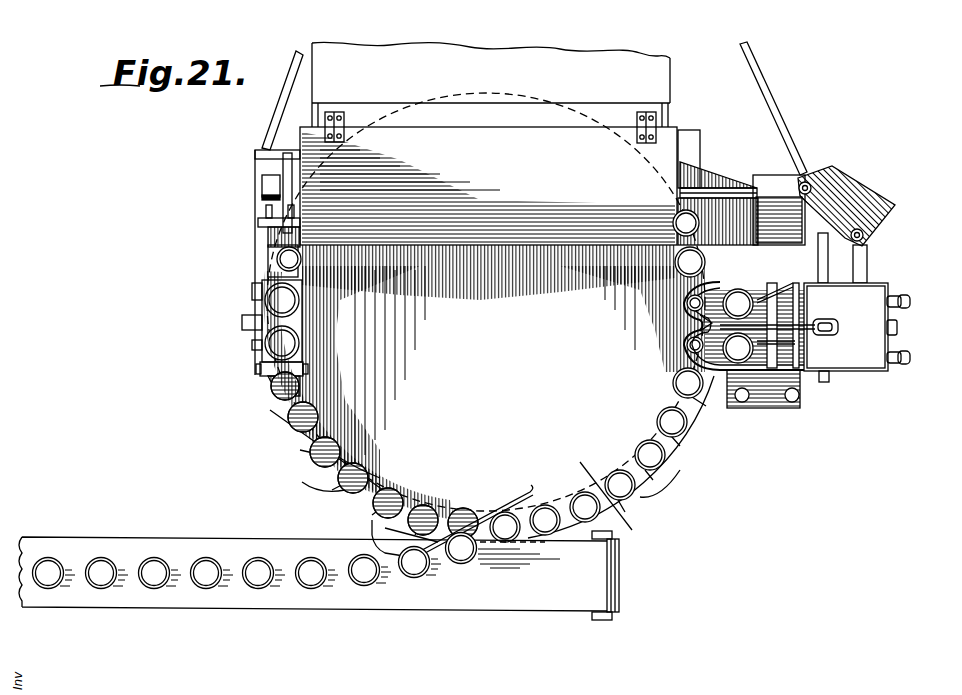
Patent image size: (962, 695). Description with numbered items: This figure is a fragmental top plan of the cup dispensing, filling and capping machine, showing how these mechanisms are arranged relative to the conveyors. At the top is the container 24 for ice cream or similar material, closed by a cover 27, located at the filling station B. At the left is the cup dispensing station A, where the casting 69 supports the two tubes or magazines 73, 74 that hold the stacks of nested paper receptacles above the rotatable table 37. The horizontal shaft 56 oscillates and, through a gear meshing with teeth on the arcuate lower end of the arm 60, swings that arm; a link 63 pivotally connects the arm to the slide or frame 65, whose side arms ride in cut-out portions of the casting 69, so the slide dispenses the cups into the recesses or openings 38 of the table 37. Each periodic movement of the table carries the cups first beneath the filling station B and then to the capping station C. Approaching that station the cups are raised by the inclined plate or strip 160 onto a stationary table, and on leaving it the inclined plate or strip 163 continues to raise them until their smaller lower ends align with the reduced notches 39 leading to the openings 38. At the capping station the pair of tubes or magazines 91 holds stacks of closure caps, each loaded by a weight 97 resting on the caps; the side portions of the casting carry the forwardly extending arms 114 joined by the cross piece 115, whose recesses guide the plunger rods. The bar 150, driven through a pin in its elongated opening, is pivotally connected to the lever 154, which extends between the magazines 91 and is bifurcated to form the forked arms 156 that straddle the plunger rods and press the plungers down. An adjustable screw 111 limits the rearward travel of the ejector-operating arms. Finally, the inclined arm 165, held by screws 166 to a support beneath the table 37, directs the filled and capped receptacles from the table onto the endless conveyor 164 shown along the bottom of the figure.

The filling station B is at (408, 85).
The container 24 is at (477, 60).
The cover 27 is at (330, 198).
The arm 60 is at (280, 156).
The link 63 is at (285, 170).
The slide or frame 65 is at (268, 236).
The cup dispensing station A is at (258, 291).
The tube or magazine 73 is at (262, 301).
The tube or magazine 74 is at (262, 334).
The casting 69 is at (300, 338).
The rotatable table 37 is at (300, 400).
The reduced notches 39 is at (310, 460).
The inclined plate or strip 163 is at (342, 493).
The recesses or openings 38 is at (380, 490).
The screws 166 is at (383, 528).
The inclined arm 165 is at (493, 511).
The endless conveyor 164 is at (425, 600).
The horizontal shaft 56 is at (703, 195).
The arms 156 is at (692, 232).
The weight 97 is at (767, 277).
The inclined plate or strip 160 is at (683, 296).
The forwardly extending arms 114 is at (690, 305).
The cross piece 115 is at (688, 325).
The tubes or magazines 91 is at (673, 383).
The bar 150 is at (838, 328).
The lever 154 is at (803, 348).
The adjustable screw 111 is at (900, 293).
The capping station C is at (898, 368).